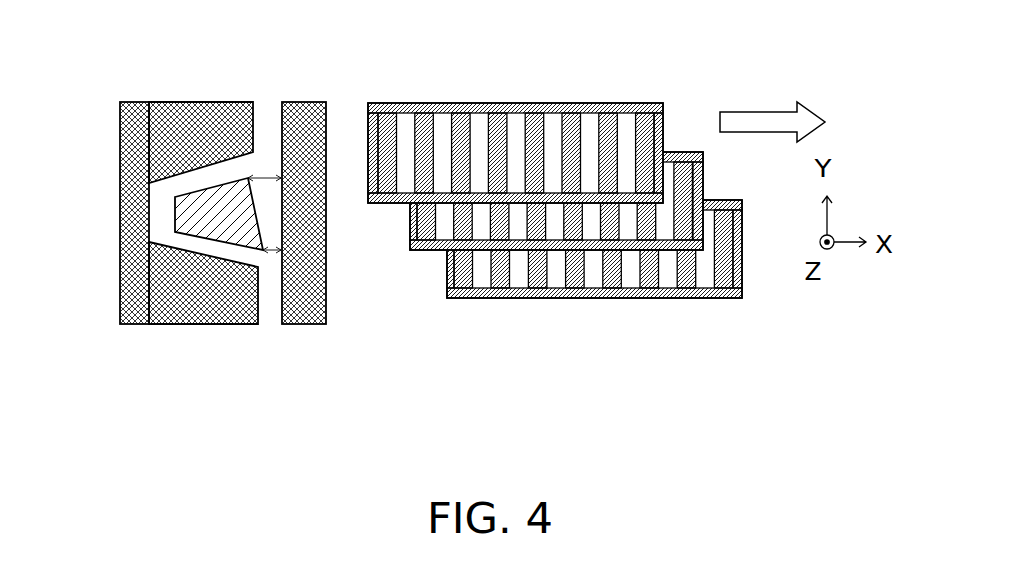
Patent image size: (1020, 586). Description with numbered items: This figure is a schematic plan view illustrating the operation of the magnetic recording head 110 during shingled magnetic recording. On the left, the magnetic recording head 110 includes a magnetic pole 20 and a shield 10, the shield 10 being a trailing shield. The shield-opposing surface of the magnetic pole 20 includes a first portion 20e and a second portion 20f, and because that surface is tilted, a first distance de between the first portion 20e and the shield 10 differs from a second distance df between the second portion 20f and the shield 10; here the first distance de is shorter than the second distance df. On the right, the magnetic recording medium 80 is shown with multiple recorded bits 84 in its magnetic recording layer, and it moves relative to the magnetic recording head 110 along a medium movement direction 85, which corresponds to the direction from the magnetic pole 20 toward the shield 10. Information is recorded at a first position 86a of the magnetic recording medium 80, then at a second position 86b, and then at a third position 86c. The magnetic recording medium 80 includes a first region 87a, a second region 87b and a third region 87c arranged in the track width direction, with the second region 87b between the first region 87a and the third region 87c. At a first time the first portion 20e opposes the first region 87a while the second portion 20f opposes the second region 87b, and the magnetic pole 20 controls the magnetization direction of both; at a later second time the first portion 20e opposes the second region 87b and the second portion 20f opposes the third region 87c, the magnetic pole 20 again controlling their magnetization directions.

The magnetic recording head 110 is at (134, 86).
The shield 10 is at (317, 100).
The magnetic pole 20 is at (178, 197).
The first portion 20e is at (205, 268).
The second portion 20f is at (168, 133).
The second distance df is at (263, 176).
The first distance de is at (268, 252).
The magnetic recording medium 80 is at (571, 199).
The recorded bits 84 is at (547, 199).
The medium movement direction 85 is at (758, 120).
The first position 86a is at (594, 278).
The second position 86b is at (546, 178).
The third position 86c is at (507, 152).
The first region 87a is at (470, 264).
The second region 87b is at (468, 222).
The third region 87c is at (460, 160).